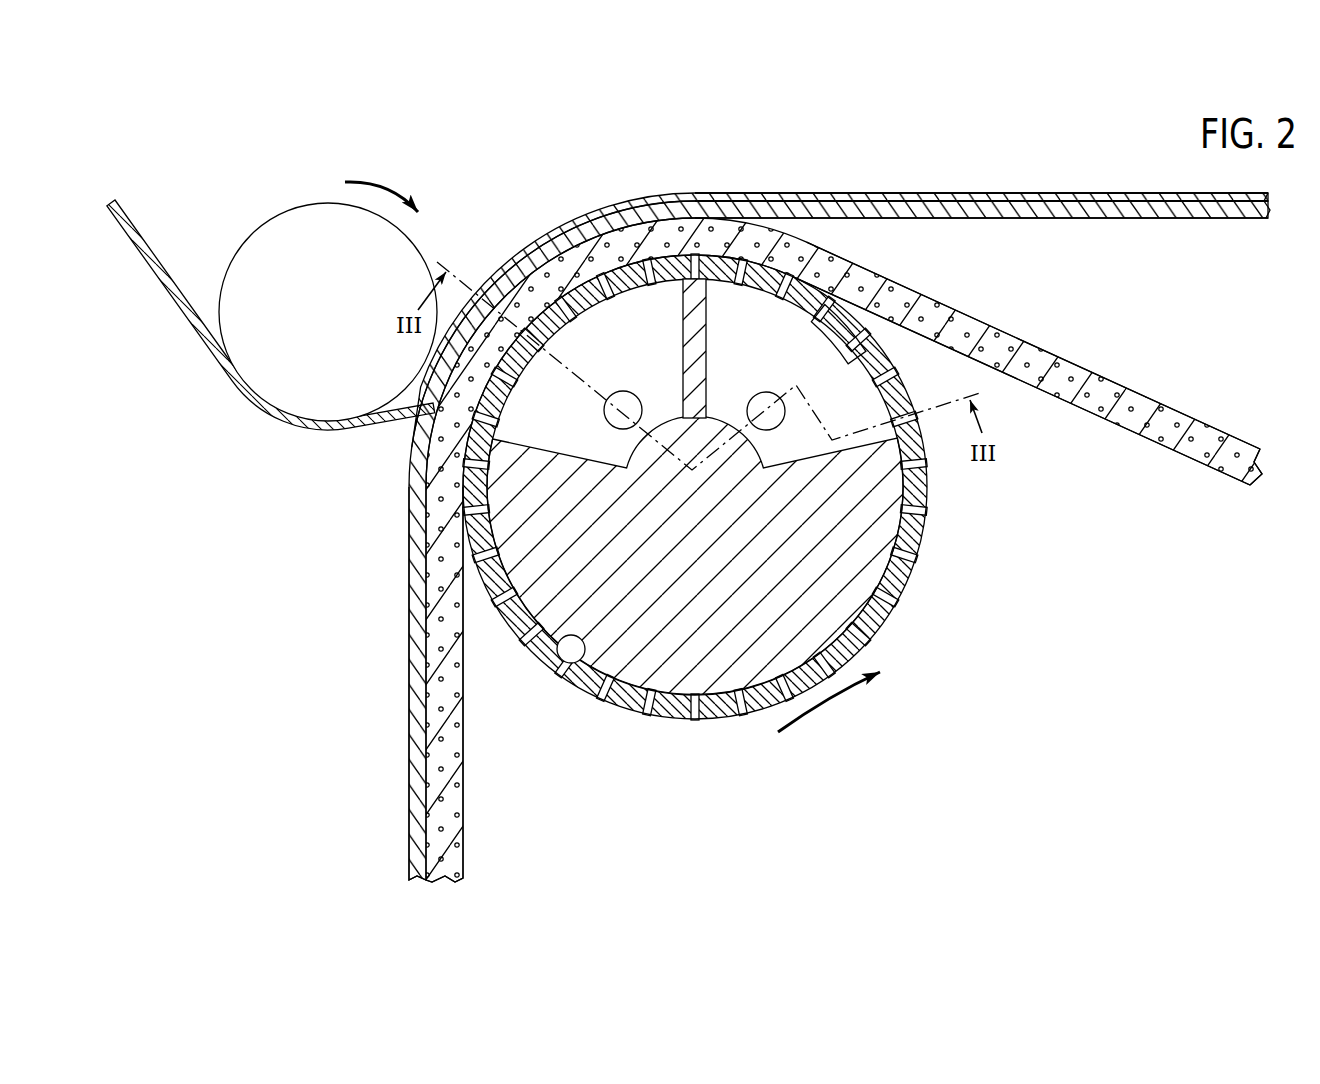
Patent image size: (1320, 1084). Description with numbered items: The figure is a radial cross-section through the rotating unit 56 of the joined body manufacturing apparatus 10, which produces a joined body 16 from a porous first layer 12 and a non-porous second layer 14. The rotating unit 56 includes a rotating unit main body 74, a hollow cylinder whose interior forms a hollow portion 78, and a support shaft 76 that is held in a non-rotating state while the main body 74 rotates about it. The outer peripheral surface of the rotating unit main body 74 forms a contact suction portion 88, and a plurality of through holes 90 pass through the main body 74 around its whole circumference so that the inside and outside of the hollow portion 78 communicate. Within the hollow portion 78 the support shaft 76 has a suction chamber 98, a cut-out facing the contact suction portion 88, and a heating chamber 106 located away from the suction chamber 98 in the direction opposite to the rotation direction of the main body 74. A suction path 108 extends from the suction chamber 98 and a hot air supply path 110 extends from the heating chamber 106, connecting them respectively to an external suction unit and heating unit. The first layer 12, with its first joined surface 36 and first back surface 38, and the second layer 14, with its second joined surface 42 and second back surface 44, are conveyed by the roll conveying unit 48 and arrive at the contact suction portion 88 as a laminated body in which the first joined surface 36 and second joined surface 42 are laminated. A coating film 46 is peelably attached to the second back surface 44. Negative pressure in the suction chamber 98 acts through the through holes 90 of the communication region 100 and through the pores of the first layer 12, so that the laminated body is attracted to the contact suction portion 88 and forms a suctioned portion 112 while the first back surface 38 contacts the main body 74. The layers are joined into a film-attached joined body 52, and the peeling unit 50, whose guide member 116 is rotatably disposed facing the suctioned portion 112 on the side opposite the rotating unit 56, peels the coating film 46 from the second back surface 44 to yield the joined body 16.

The joined body manufacturing apparatus 10 is at (183, 140).
The first layer 12 is at (1037, 369).
The second layer 14 is at (982, 207).
The joined body 16 is at (405, 734).
The first joined surface 36 is at (1152, 396).
The first back surface 38 is at (1145, 440).
The second joined surface 42 is at (1058, 214).
The second back surface 44 is at (1040, 195).
The coating film 46 is at (156, 263).
The roll conveying unit 48 is at (741, 456).
The peeling unit 50 is at (325, 273).
The film-attached joined body 52 is at (838, 498).
The rotating unit 56 is at (736, 524).
The rotating unit main body 74 is at (731, 487).
The support shaft 76 is at (695, 456).
The hollow portion 78 is at (556, 657).
The contact suction portion 88 is at (628, 262).
The through holes 90 is at (741, 275).
The suction chamber 98 is at (665, 303).
The communication region 100 is at (584, 273).
The heating chamber 106 is at (850, 375).
The suction path 108 is at (628, 404).
The hot air supply path 110 is at (763, 404).
The suctioned portion 112 is at (571, 201).
The guide member 116 is at (270, 250).